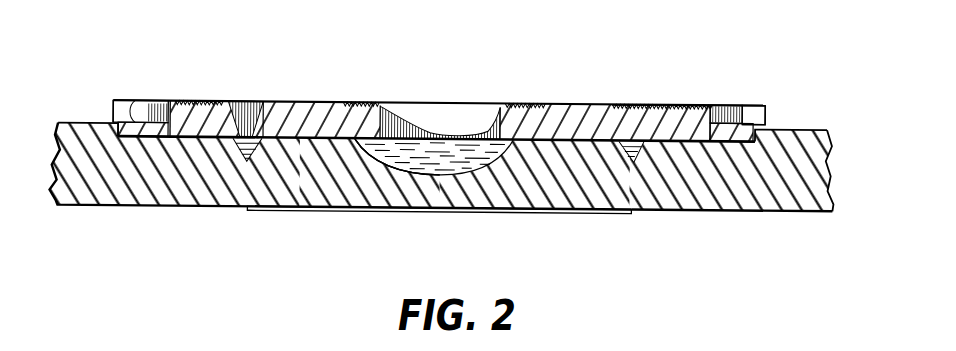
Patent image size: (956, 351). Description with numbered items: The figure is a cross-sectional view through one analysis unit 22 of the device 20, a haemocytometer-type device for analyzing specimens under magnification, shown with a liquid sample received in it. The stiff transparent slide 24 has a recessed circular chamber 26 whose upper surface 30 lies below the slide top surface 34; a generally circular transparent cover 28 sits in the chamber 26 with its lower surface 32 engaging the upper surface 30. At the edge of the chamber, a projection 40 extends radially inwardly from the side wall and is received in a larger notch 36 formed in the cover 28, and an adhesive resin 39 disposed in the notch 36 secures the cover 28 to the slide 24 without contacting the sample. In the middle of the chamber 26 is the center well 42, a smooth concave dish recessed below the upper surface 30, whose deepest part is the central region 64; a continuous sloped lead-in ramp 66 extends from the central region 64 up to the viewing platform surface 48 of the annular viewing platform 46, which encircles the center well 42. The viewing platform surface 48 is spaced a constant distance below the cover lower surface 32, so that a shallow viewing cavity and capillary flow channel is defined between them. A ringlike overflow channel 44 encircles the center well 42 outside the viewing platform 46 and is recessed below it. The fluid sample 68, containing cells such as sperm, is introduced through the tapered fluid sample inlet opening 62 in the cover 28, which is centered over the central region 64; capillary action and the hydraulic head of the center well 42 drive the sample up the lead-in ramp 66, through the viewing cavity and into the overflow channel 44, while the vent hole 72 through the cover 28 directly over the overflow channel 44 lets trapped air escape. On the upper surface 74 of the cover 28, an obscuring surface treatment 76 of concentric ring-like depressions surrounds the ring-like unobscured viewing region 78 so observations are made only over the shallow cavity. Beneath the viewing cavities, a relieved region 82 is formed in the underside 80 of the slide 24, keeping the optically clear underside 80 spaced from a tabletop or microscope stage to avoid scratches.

The device 20 is at (120, 68).
The analysis unit 22 is at (147, 80).
The slide 24 is at (817, 128).
The chamber 26 is at (747, 142).
The cover 28 is at (750, 108).
The upper surface 30 is at (128, 125).
The lower surface 32 is at (676, 145).
The slide top surface 34 is at (782, 122).
The notch 36 is at (164, 100).
The adhesive resin 39 is at (133, 102).
The projection 40 is at (721, 108).
The center well 42 is at (415, 140).
The overflow channel 44 is at (248, 140).
The viewing platform 46 is at (348, 137).
The viewing platform surface 48 is at (303, 127).
The fluid sample inlet opening 62 is at (500, 117).
The central region 64 is at (435, 173).
The lead-in ramp 66 is at (377, 141).
The fluid sample 68 is at (533, 200).
The vent hole 72 is at (247, 100).
The upper surface 74 is at (628, 98).
The obscuring surface treatment 76 is at (513, 107).
The viewing region 78 is at (583, 107).
The underside 80 is at (655, 212).
The relieved region 82 is at (594, 212).